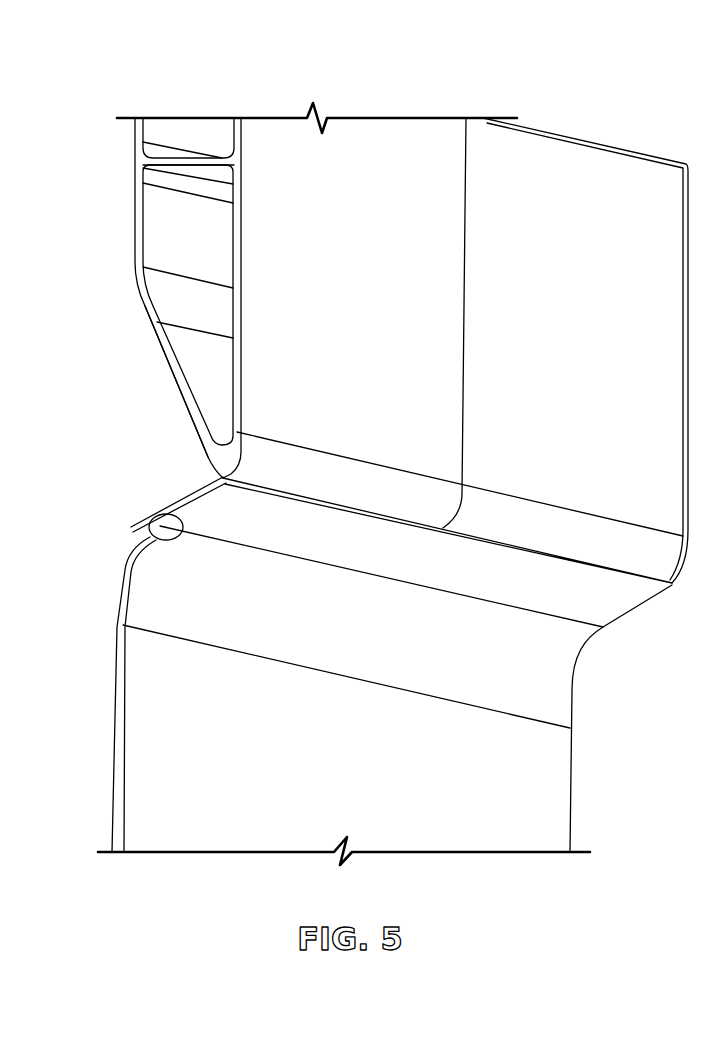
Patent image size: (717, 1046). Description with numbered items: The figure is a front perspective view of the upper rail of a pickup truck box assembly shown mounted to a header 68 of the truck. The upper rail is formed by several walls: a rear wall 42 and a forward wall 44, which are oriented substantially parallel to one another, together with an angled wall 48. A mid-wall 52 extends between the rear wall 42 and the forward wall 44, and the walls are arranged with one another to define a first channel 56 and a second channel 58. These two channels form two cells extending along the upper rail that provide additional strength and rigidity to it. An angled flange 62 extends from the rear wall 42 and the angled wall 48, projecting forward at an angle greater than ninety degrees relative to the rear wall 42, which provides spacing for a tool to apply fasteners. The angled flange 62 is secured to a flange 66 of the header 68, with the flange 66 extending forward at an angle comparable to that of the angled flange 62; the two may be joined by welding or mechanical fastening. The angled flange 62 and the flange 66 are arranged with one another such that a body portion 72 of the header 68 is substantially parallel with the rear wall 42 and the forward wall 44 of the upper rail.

The rear wall 42 is at (345, 624).
The forward wall 44 is at (142, 200).
The angled wall 48 is at (167, 355).
The mid-wall 52 is at (193, 156).
The first channel 56 is at (177, 138).
The second channel 58 is at (214, 230).
The angled flange 62 is at (167, 507).
The flange 66 is at (140, 546).
The header 68 is at (178, 808).
The body portion 72 is at (118, 632).